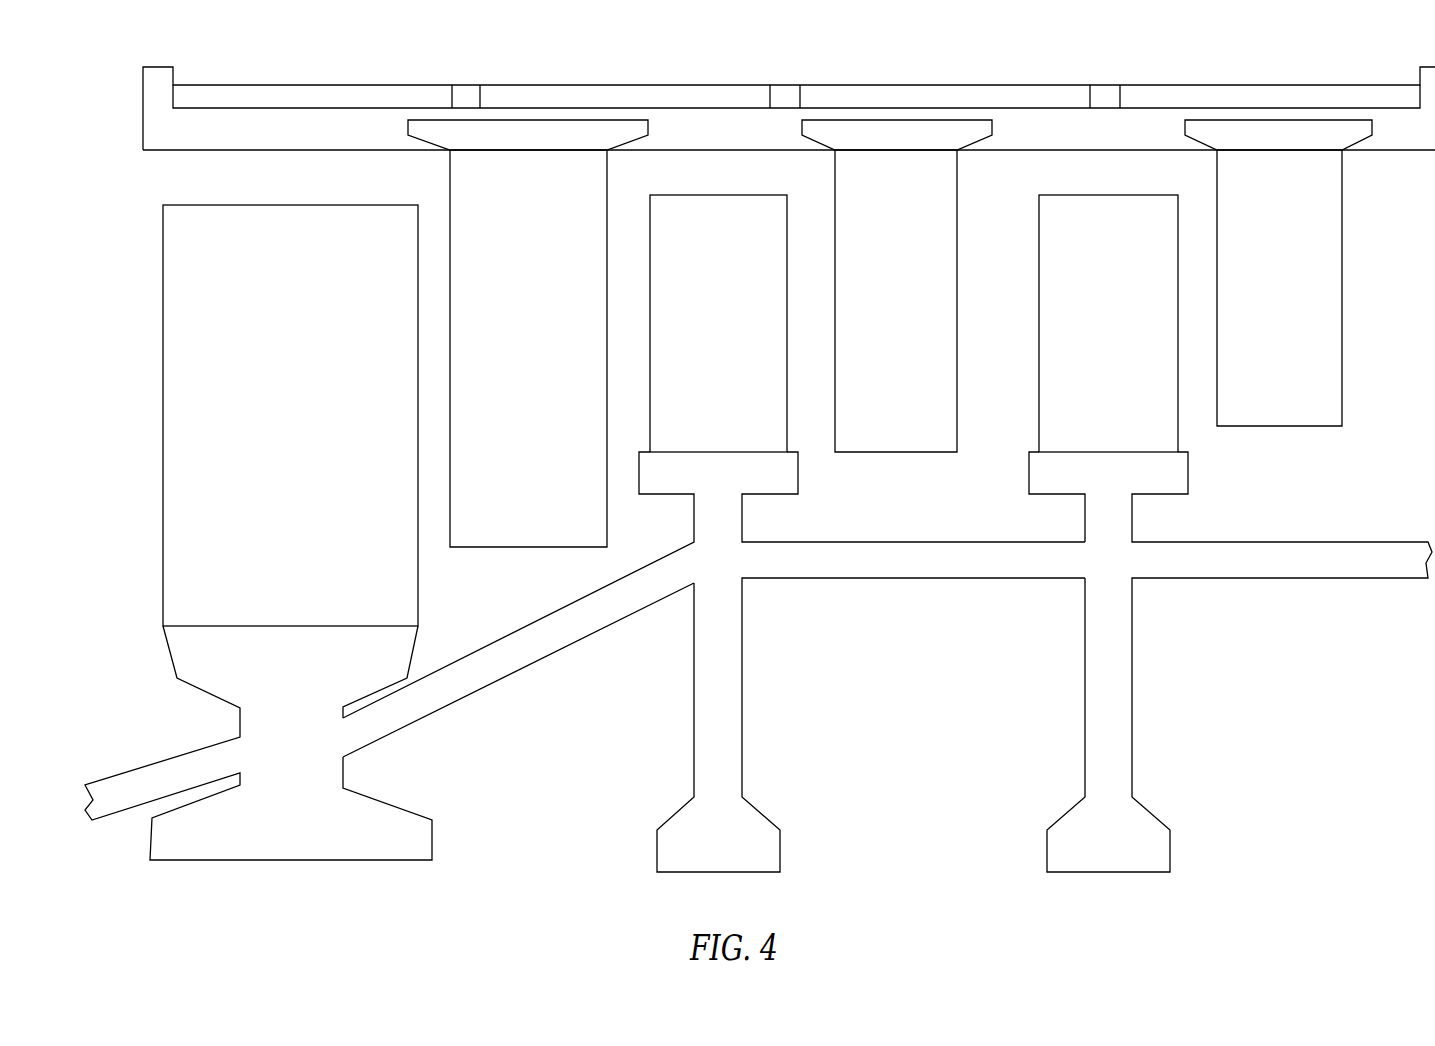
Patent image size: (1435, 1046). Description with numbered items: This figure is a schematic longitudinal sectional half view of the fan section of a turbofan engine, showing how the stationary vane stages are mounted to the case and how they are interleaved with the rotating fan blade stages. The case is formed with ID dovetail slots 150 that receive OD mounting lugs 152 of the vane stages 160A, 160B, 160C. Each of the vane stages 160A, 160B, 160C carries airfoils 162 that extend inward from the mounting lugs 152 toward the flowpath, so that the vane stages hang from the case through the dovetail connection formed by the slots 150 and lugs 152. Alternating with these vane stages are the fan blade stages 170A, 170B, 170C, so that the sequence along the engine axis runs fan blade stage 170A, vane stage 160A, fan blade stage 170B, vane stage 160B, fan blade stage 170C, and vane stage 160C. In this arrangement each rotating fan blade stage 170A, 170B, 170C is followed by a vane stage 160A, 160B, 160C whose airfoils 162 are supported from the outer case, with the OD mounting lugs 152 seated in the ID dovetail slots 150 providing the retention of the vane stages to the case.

The ID dovetail slots 150 is at (576, 138).
The OD mounting lugs 152 is at (507, 136).
The vane stage 160A is at (568, 297).
The vane stage 160B is at (919, 184).
The vane stage 160C is at (1260, 183).
The airfoils 162 is at (546, 341).
The fan blade stage 170A is at (288, 240).
The fan blade stage 170B is at (760, 282).
The fan blade stage 170C is at (1108, 223).